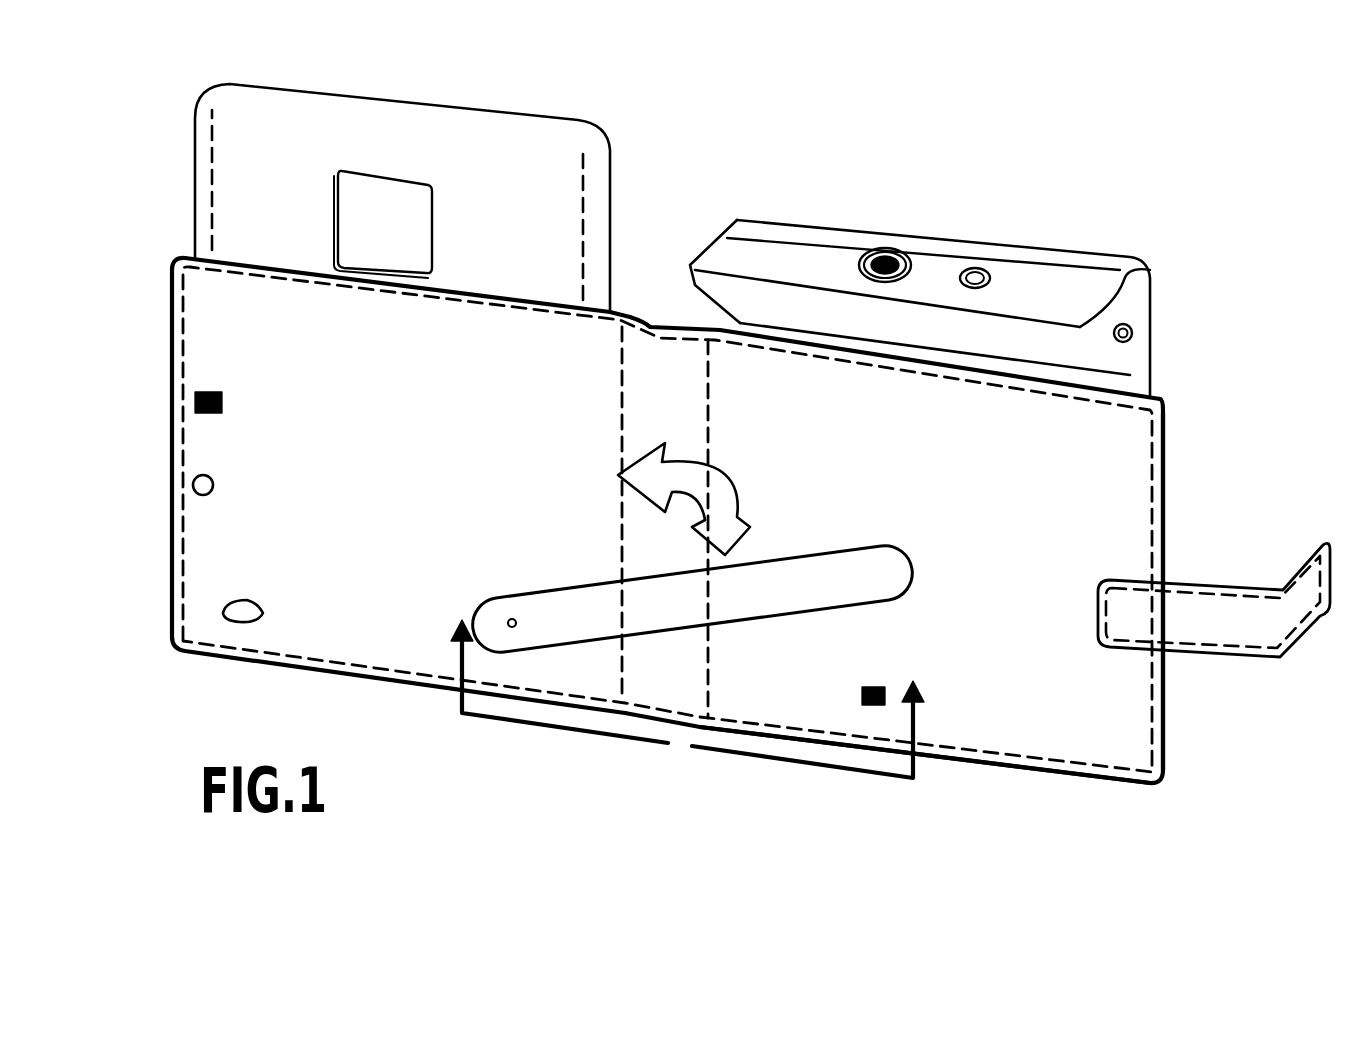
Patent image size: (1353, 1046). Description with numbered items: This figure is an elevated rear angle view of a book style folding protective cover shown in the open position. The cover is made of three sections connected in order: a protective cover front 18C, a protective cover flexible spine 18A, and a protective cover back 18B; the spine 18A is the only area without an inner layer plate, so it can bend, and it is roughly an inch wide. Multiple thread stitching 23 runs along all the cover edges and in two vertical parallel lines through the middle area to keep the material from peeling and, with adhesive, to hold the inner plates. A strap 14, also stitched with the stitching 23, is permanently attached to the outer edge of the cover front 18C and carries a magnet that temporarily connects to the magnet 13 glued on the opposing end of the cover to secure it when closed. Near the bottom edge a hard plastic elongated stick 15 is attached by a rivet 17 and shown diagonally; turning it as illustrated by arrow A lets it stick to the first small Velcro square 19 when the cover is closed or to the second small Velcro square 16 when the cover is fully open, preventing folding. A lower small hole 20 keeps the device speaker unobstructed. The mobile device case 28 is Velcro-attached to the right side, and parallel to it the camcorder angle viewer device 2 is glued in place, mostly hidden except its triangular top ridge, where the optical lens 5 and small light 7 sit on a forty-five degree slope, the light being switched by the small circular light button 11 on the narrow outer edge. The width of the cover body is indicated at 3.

The digital video camcorder angle viewer device 2 is at (767, 237).
The case body width / bracket 3 is at (687, 699).
The optical lens 5 is at (885, 247).
The small light 7 is at (975, 268).
The small circular light button 11 is at (1133, 333).
The magnet 13 is at (213, 483).
The strap 14 is at (1210, 620).
The elongated stick 15 is at (833, 565).
The second small Velcro square 16 is at (888, 686).
The rivet 17 is at (515, 617).
The protective cover flexible spine 18A is at (667, 357).
The protective cover back 18B is at (360, 637).
The protective cover front 18C is at (1107, 728).
The first small Velcro square 19 is at (220, 389).
The lower small hole 20 is at (263, 618).
The multiple thread stitching 23 is at (1150, 527).
The mobile device case 28 is at (593, 190).
The arrow A is at (684, 499).